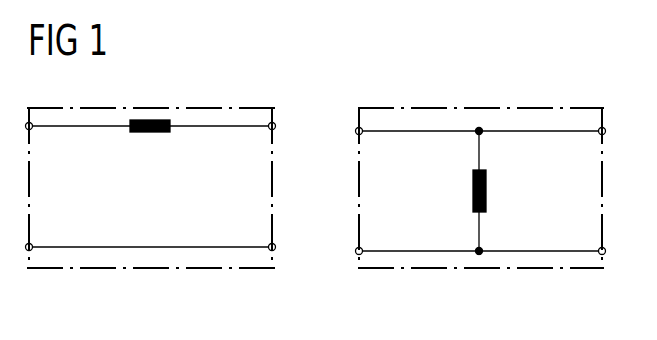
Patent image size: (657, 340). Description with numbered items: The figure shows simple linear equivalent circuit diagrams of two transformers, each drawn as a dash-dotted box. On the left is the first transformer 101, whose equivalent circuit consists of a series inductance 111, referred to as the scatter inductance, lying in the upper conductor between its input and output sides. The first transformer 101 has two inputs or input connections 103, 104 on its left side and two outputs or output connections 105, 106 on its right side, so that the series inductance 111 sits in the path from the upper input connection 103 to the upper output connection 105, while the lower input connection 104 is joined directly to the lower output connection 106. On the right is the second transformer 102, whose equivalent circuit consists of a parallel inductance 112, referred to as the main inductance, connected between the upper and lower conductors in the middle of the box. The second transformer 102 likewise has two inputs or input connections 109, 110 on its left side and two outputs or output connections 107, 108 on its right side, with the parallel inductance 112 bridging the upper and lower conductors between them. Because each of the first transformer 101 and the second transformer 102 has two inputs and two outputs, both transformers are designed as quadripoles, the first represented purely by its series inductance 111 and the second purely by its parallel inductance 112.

The first transformer 101 is at (150, 268).
The second transformer 102 is at (528, 107).
The input connection 103 is at (33, 130).
The input connection 104 is at (31, 243).
The output connection 105 is at (269, 130).
The output connection 106 is at (269, 243).
The output connection 107 is at (600, 135).
The output connection 108 is at (600, 247).
The input connection 109 is at (361, 135).
The input connection 110 is at (361, 247).
The series inductance 111 is at (146, 118).
The parallel inductance 112 is at (487, 182).